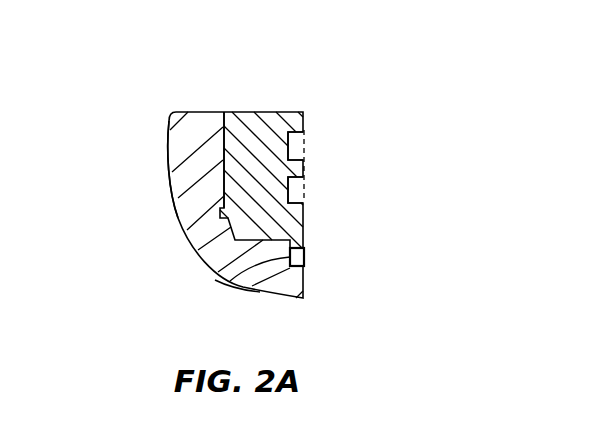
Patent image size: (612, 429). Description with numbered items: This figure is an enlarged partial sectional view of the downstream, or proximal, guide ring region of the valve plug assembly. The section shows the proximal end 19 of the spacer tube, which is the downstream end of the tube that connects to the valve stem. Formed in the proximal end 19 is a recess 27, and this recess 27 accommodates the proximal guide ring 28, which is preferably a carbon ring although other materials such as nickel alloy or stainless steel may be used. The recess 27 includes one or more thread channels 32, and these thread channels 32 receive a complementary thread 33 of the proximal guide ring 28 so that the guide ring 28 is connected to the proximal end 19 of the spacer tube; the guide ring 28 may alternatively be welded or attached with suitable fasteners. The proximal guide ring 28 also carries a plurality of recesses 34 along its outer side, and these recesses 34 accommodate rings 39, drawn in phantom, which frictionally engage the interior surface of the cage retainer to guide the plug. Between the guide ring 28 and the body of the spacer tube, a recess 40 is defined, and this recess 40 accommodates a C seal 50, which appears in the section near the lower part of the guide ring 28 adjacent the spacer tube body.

The proximal end 19 is at (187, 125).
The recess 27 is at (225, 158).
The proximal guide ring 28 is at (295, 110).
The thread channels 32 is at (222, 115).
The complementary thread 33 is at (225, 112).
The recesses 34 is at (303, 138).
The rings 39 is at (304, 135).
The recess 40 is at (252, 276).
The C seal 50 is at (306, 257).